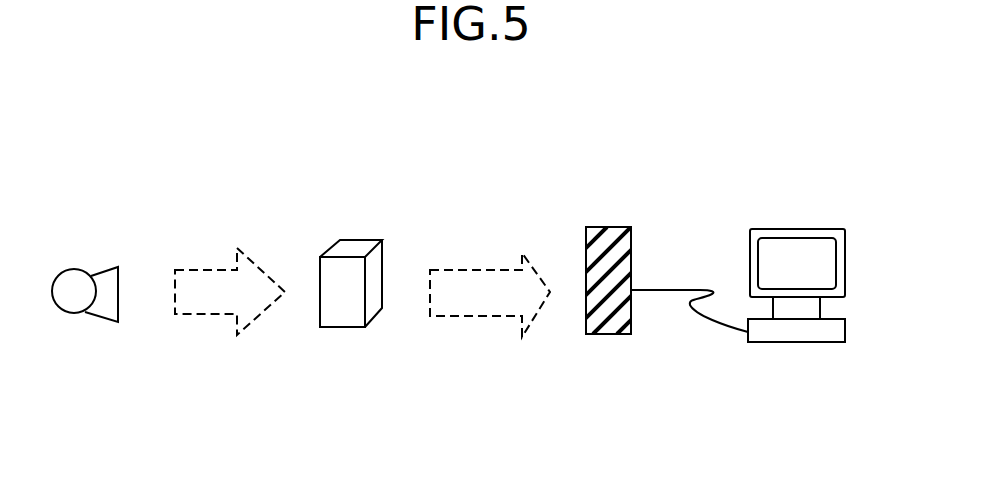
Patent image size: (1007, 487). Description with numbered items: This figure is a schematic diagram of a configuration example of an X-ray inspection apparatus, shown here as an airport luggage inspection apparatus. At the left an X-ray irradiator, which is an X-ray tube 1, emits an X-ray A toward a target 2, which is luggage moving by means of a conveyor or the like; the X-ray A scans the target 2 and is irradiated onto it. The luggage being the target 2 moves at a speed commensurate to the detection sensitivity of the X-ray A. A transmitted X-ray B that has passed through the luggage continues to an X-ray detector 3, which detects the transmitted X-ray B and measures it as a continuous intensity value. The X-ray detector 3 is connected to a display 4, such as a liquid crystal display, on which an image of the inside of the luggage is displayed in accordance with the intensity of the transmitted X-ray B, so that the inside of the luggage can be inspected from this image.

The X-ray tube 1 is at (80, 315).
The X-ray A is at (212, 315).
The target 2 is at (345, 327).
The transmitted X-ray B is at (477, 317).
The X-ray detector 3 is at (610, 334).
The display 4 is at (800, 342).